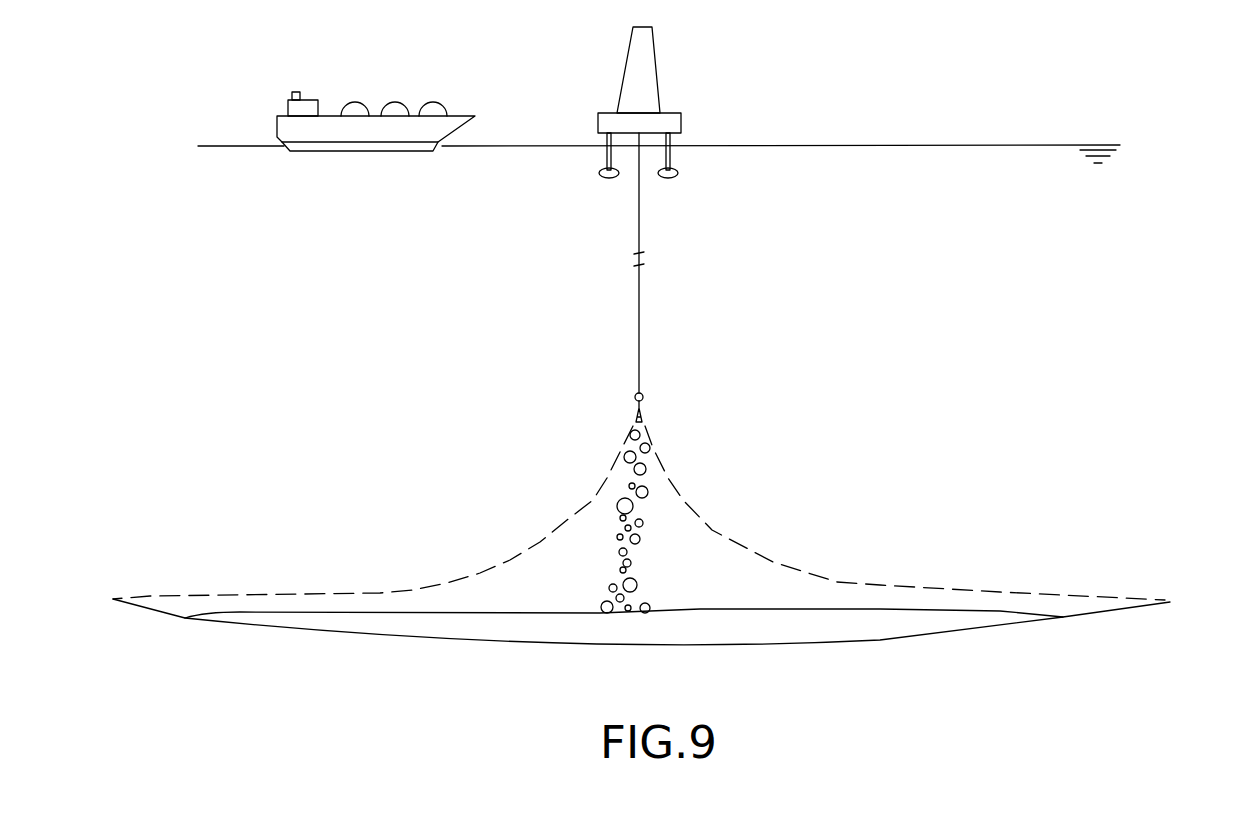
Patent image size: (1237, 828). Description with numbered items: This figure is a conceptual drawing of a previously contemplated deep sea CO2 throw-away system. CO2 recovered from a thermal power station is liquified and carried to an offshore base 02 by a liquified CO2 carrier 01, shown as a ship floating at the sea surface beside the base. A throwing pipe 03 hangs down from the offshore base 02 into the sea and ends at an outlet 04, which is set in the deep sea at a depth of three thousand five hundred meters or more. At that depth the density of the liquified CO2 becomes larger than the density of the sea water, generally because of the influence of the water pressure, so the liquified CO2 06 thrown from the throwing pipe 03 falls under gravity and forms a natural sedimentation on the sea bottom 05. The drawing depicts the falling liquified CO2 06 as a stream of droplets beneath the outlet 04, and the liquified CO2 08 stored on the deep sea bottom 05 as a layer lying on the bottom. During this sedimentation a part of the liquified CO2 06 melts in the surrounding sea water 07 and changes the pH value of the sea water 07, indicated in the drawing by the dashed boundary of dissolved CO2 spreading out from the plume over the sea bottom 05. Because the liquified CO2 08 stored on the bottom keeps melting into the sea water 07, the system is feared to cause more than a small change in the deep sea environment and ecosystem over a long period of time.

The liquified CO2 carrier 01 is at (378, 102).
The offshore base 02 is at (652, 78).
The throwing pipe 03 is at (639, 243).
The outlet 04 is at (644, 392).
The sea bottom 05 is at (610, 687).
The liquified CO2 06 is at (633, 506).
The sea water 07 is at (652, 597).
The liquified CO2 stored on the deep sea bottom 08 is at (708, 633).
The element CO2 is at (712, 570).